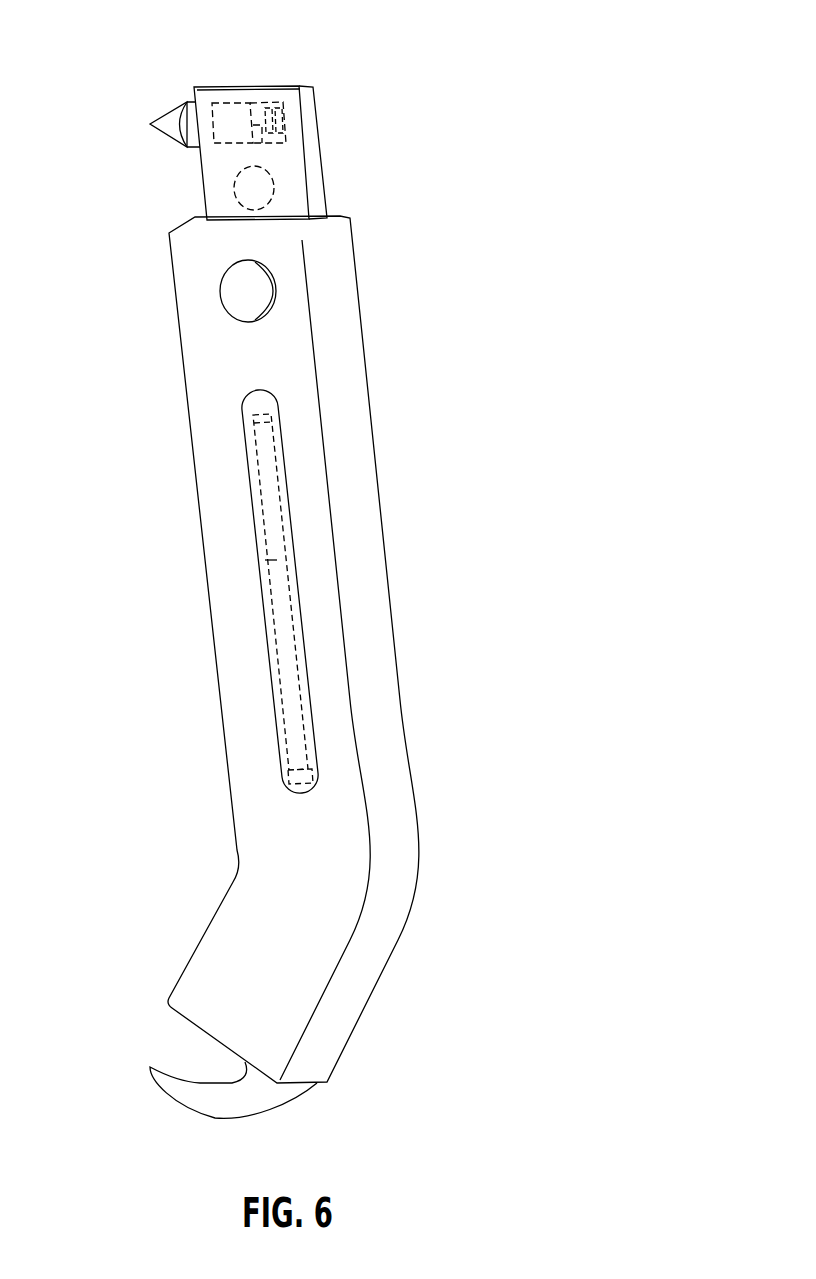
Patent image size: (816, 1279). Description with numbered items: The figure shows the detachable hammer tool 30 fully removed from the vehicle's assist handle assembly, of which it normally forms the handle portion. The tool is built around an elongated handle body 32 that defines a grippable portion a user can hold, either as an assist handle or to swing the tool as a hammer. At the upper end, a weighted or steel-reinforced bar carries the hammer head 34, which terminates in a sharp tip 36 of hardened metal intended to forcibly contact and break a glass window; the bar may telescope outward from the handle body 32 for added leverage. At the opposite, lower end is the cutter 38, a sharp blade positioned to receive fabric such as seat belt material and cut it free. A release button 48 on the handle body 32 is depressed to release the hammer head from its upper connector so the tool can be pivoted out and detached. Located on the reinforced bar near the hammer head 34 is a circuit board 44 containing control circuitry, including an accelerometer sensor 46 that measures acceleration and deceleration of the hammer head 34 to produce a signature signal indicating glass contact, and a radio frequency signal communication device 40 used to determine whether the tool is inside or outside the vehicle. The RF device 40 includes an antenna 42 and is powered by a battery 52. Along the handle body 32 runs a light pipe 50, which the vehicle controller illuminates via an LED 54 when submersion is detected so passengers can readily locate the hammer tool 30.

The detachable hammer tool 30 is at (269, 574).
The handle body 32 is at (357, 385).
The hammer head 34 is at (312, 173).
The sharp tip 36 is at (167, 118).
The cutter 38 is at (177, 1085).
The RF signal communication device 40 is at (267, 110).
The antenna 42 is at (287, 133).
The circuit board 44 is at (257, 108).
The accelerometer sensor 46 is at (230, 110).
The release button 48 is at (240, 288).
The light pipe 50 is at (247, 446).
The battery 52 is at (233, 185).
The LED 54 is at (273, 560).